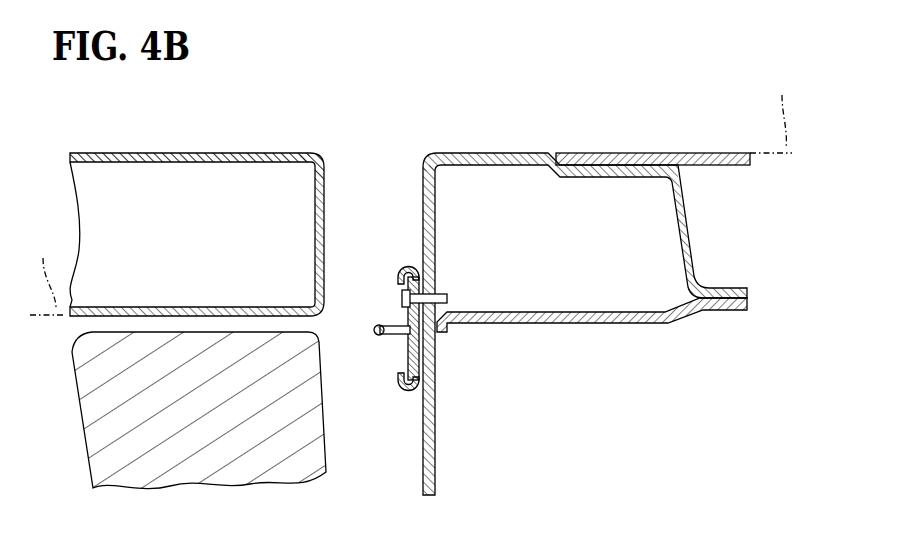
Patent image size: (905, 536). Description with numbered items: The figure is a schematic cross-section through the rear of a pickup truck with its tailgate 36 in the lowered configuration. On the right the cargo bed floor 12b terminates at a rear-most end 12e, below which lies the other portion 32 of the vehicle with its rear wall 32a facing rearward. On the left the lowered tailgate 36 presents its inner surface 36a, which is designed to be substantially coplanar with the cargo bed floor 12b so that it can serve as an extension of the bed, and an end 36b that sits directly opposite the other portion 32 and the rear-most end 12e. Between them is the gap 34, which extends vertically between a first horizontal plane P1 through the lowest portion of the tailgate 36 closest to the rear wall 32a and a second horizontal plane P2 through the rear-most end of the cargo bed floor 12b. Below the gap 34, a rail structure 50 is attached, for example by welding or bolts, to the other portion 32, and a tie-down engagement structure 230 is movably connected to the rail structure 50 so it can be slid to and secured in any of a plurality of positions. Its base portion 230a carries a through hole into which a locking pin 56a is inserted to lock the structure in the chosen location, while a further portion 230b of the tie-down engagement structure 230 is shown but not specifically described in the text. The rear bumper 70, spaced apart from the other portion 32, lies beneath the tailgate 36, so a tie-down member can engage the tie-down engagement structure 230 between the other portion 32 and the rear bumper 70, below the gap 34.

The cargo bed floor 12b is at (628, 153).
The rear-most end of the cargo bed floor 12e is at (591, 291).
The other portion of the vehicle 32 is at (690, 227).
The rear wall of the other portion of the vehicle 32a is at (437, 420).
The gap 34 is at (361, 174).
The tailgate 36 is at (189, 212).
The inner surface of the tailgate 36a is at (148, 152).
The end of the tailgate 36b is at (333, 190).
The rail structure 50 is at (403, 266).
The locking pin 56a is at (448, 299).
The rear bumper 70 is at (110, 440).
The tie-down engagement structure 230 is at (452, 284).
The base portion 230a is at (437, 367).
The clip arm 230b is at (378, 333).
The first horizontal plane P1 is at (48, 276).
The second horizontal plane P2 is at (771, 112).